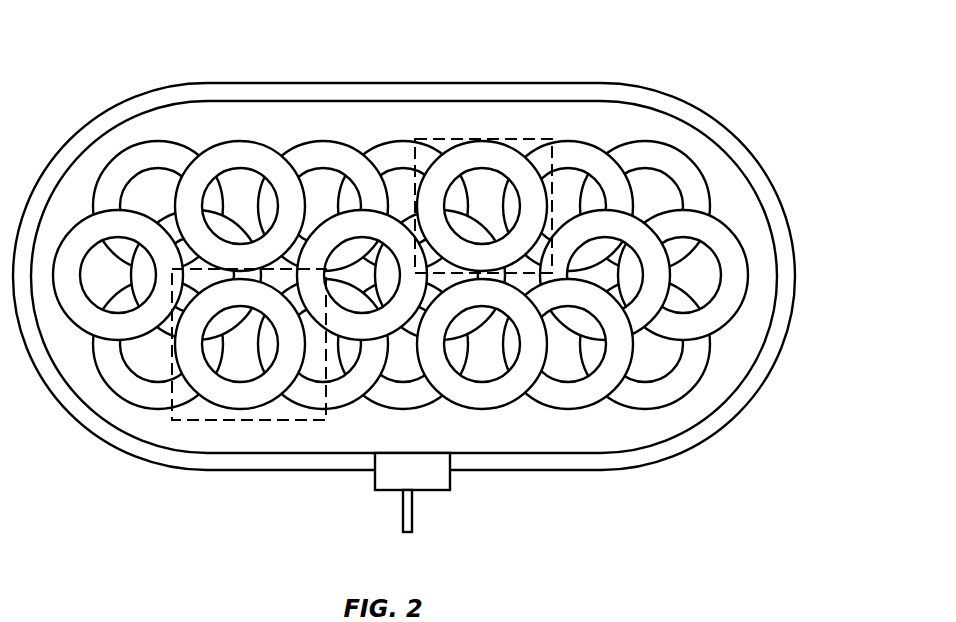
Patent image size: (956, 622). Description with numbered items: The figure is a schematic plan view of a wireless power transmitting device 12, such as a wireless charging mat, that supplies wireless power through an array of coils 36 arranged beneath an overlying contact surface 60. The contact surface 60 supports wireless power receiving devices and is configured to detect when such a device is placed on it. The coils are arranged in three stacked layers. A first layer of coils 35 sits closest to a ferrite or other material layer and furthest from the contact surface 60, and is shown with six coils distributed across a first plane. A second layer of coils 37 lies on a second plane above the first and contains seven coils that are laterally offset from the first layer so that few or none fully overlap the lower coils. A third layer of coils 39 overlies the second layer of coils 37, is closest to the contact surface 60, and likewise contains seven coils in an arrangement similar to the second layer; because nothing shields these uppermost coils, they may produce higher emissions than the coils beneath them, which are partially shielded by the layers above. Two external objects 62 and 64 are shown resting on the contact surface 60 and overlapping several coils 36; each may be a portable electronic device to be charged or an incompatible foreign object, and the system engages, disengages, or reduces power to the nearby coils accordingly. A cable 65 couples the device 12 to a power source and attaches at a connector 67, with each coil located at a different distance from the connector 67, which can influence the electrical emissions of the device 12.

The wireless power transmitting device 12 is at (404, 278).
The first layer of coils 35 is at (397, 141).
The array of coils 36 is at (547, 393).
The second layer of coils 37 is at (318, 141).
The third layer of coils 39 is at (243, 141).
The contact surface 60 is at (588, 471).
The external object 62 is at (276, 424).
The external object 64 is at (519, 139).
The cable 65 is at (414, 520).
The connector 67 is at (420, 454).